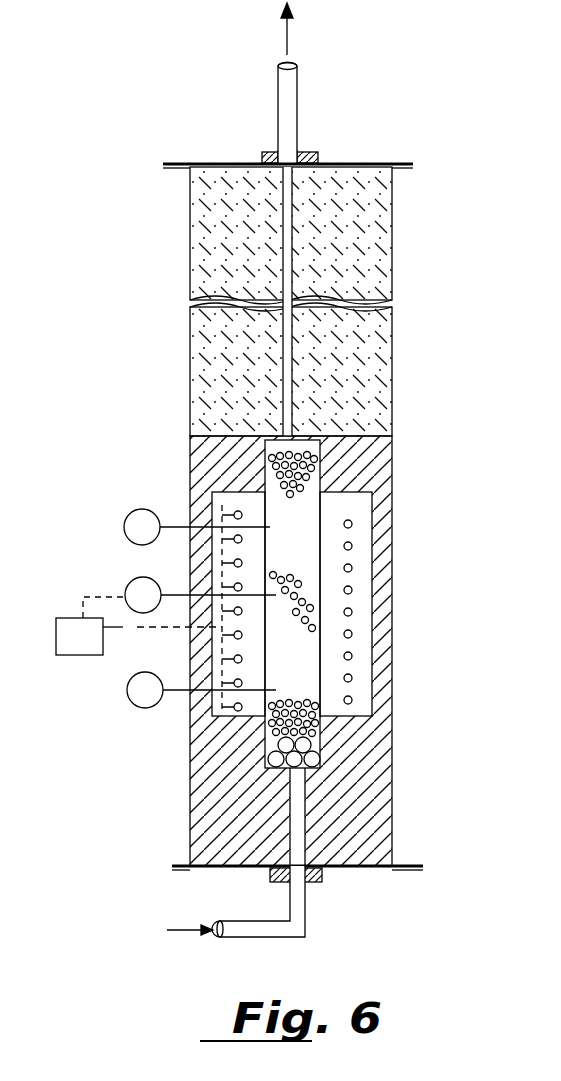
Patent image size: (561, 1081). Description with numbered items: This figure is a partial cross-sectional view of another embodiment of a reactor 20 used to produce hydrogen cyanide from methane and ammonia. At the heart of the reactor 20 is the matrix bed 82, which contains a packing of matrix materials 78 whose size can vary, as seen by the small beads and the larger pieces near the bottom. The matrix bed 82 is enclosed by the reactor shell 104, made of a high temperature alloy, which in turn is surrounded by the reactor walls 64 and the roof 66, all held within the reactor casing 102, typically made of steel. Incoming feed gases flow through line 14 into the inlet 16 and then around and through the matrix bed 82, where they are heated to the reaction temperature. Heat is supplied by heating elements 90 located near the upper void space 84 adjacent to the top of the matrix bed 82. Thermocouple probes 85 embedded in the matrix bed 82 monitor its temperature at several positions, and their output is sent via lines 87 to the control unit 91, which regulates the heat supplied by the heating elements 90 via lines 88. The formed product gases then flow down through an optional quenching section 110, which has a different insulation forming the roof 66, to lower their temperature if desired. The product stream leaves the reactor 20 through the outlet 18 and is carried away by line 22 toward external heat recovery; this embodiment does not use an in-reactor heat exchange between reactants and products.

The line 14 is at (272, 932).
The inlet 16 is at (316, 877).
The outlet 18 is at (308, 150).
The reactor 20 is at (448, 365).
The line 22 is at (285, 97).
The reactor walls 64 is at (367, 772).
The roof 66 is at (362, 220).
The matrix materials 78 is at (308, 708).
The matrix bed 82 is at (310, 542).
The upper void space 84 is at (303, 447).
The thermocouple probes 85 is at (138, 598).
The lines 87 is at (85, 592).
The lines 88 is at (122, 630).
The heating elements 90 is at (352, 614).
The control unit 91 is at (80, 645).
The reactor casing 102 is at (390, 512).
The reactor shell 104 is at (263, 647).
The quenching section 110 is at (288, 250).